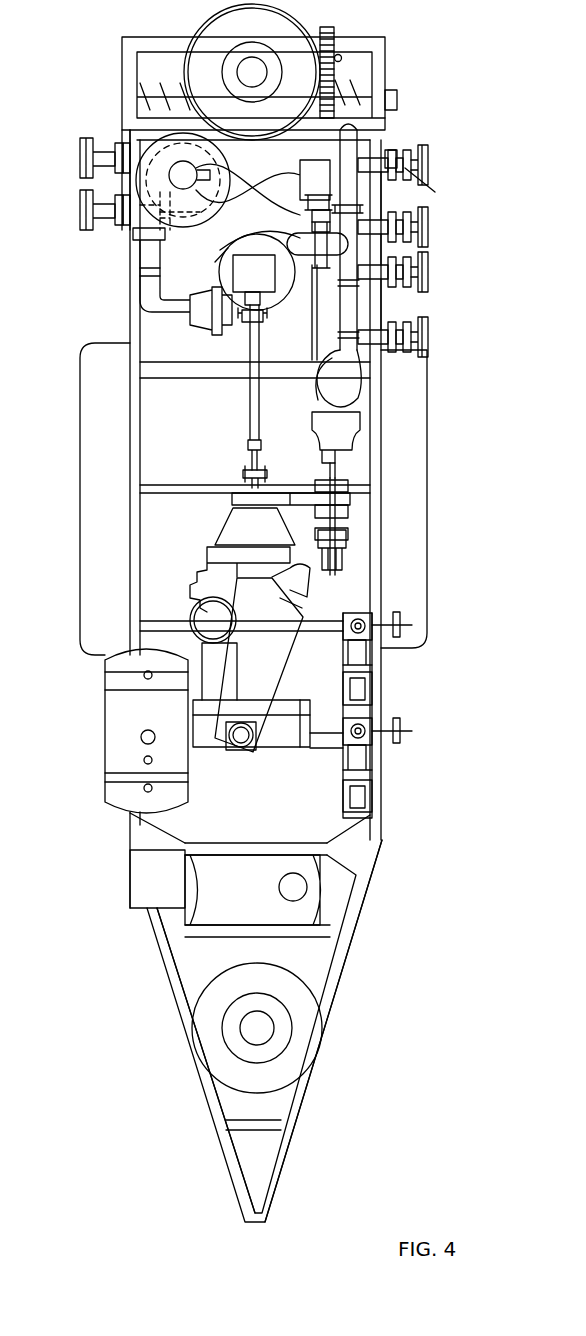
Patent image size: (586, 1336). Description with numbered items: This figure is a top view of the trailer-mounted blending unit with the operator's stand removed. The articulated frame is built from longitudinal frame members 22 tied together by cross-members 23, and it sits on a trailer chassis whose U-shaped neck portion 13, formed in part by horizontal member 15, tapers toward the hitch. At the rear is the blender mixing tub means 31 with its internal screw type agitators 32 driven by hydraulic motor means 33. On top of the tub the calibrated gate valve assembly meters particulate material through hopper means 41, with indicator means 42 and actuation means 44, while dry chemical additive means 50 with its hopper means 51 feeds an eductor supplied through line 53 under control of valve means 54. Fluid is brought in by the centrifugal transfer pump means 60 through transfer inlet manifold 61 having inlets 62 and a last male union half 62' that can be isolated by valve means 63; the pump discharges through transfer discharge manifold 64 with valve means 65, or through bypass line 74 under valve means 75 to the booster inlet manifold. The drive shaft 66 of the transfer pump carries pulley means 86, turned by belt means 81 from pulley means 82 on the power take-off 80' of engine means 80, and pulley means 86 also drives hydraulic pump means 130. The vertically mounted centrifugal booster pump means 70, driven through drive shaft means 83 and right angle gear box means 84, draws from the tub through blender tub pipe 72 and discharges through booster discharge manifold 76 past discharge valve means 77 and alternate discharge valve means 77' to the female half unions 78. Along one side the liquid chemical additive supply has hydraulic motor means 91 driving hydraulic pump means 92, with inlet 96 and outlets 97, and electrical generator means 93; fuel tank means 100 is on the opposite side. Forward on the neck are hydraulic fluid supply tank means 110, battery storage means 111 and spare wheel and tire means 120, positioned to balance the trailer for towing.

The U-shaped neck portion 13 is at (215, 1105).
The horizontal member 15 is at (222, 1132).
The longitudinal frame members 22 is at (130, 328).
The cross-members 23 is at (195, 372).
The blender mixing tub means 31 is at (130, 64).
The screw type agitators 32 is at (352, 92).
The hydraulic motor means 33 is at (397, 102).
The hopper means 41 is at (280, 40).
The indicator means 42 is at (335, 38).
The actuation means 44 is at (342, 56).
The dry chemical additive means 50 is at (185, 195).
The hopper means 51 is at (190, 158).
The line 53 is at (238, 190).
The valve means 54 is at (324, 208).
The centrifugal transfer pump means 60 is at (310, 385).
The transfer inlet manifold 61 is at (340, 312).
The inlets 62 is at (429, 282).
The male union half 62' is at (432, 165).
The valve means 63 is at (305, 203).
The transfer discharge manifold 64 is at (358, 310).
The valve means 65 is at (363, 210).
The drive shaft 66 is at (340, 478).
The centrifugal booster pump means 70 is at (268, 318).
The blender tub pipe 72 is at (252, 247).
The bypass line 74 is at (295, 295).
The valve means 75 is at (322, 256).
The booster discharge manifold 76 is at (140, 262).
The discharge valve means 77 is at (82, 180).
The alternate discharge valve means 77' is at (180, 227).
The female half unions 78 is at (85, 158).
The engine means 80 is at (268, 658).
The power take-off 80' is at (220, 623).
The belt means 81 is at (295, 495).
The pulley means 82 is at (262, 495).
The drive shaft means 83 is at (260, 446).
The right angle gear box means 84 is at (254, 280).
The pulley means 86 is at (340, 498).
The hydraulic motor means 91 is at (366, 655).
The hydraulic pump means 92 is at (365, 625).
The electrical generator means 93 is at (365, 700).
The inlet 96 is at (412, 625).
The outlets 97 is at (362, 632).
The fuel tank means 100 is at (128, 742).
The hydraulic fluid supply tank means 110 is at (210, 910).
The battery storage means 111 is at (140, 875).
The spare wheel and tire means 120 is at (208, 1042).
The hydraulic pump means 130 is at (338, 560).